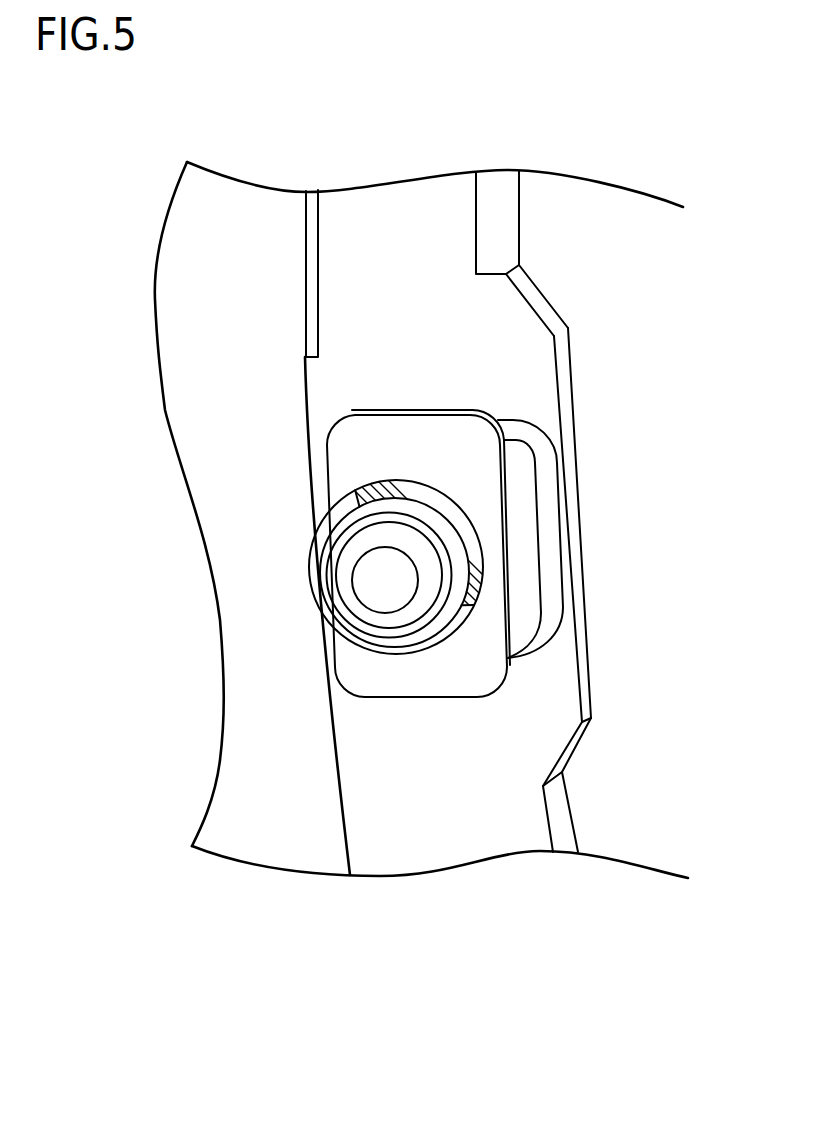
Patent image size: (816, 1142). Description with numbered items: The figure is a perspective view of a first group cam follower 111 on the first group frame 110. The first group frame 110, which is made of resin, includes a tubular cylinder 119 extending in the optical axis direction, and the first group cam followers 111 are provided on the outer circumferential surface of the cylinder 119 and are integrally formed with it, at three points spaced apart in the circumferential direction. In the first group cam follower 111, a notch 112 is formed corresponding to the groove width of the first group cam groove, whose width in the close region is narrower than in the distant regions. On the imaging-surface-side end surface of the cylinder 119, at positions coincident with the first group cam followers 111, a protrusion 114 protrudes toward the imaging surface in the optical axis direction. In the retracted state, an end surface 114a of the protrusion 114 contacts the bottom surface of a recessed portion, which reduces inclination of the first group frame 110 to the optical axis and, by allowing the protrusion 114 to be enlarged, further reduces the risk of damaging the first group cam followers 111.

The first group frame 110 is at (233, 250).
The first group cam follower 111 is at (380, 578).
The notch 112 is at (437, 500).
The protrusion 114 is at (589, 511).
The end surface 114a is at (565, 367).
The cylinder 119 is at (272, 845).